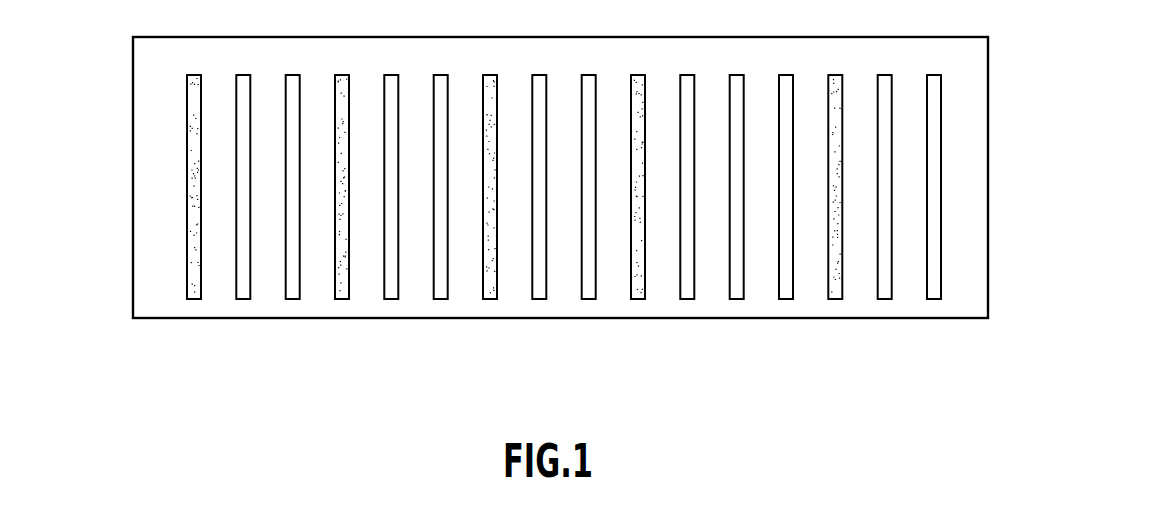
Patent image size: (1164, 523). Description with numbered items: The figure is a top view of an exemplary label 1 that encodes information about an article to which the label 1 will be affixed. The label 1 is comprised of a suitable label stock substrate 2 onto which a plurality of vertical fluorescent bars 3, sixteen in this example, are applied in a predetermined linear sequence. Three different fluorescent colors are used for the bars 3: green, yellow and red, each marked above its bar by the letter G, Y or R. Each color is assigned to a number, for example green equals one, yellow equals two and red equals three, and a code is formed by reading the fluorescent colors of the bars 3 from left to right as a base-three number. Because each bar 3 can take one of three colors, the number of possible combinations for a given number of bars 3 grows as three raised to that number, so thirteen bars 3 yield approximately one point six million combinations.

The label 1 is at (639, 205).
The label stock substrate 2 is at (226, 320).
The vertical fluorescent bars 3 is at (483, 282).